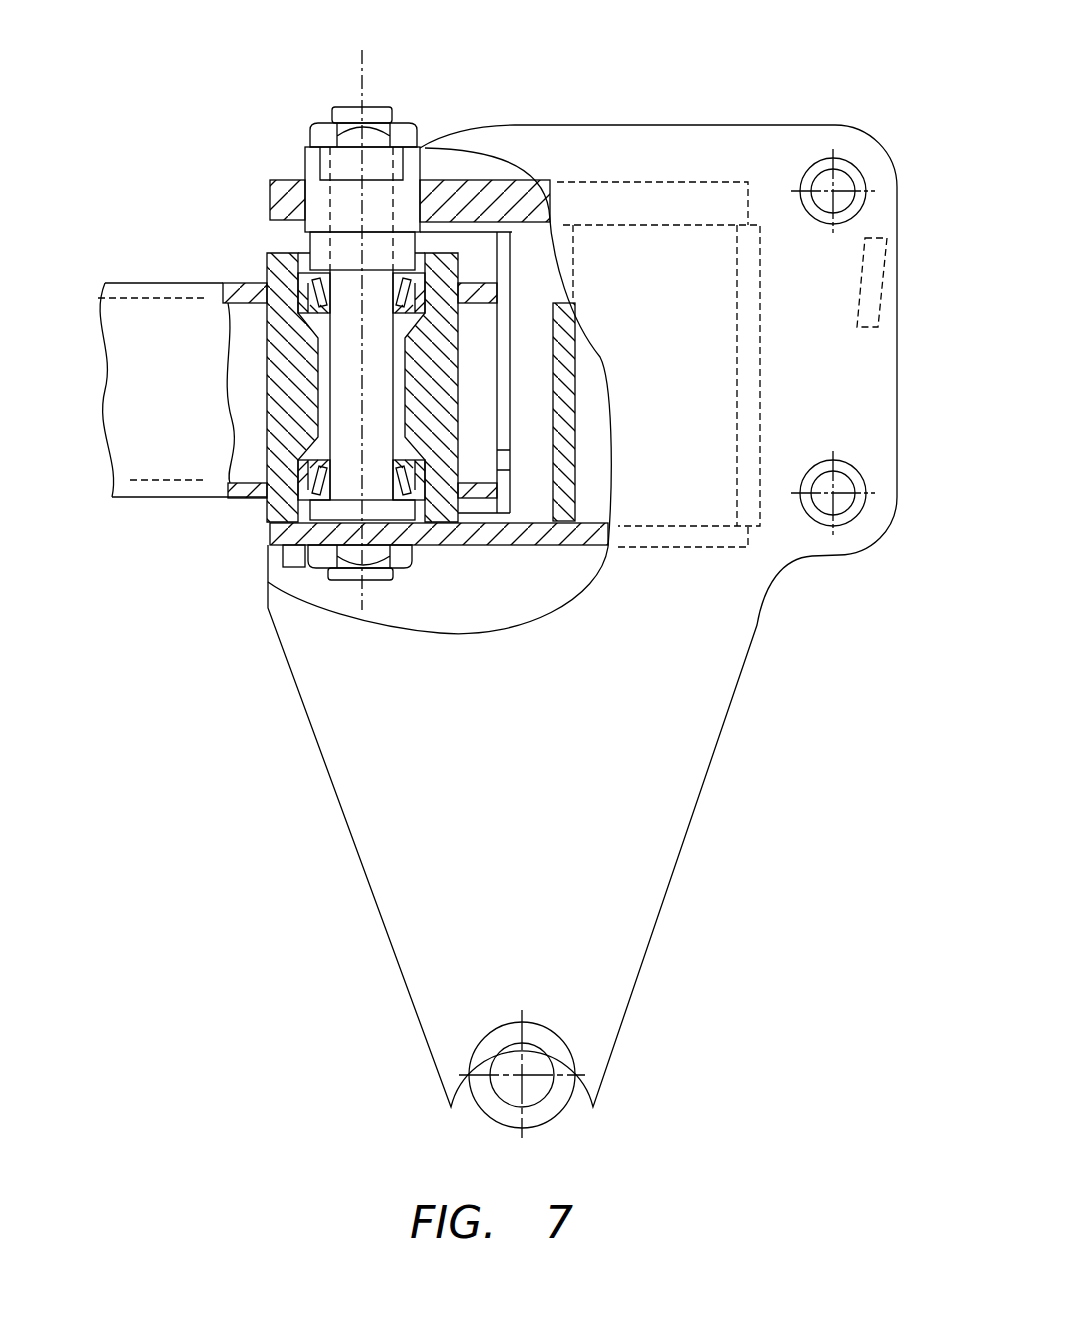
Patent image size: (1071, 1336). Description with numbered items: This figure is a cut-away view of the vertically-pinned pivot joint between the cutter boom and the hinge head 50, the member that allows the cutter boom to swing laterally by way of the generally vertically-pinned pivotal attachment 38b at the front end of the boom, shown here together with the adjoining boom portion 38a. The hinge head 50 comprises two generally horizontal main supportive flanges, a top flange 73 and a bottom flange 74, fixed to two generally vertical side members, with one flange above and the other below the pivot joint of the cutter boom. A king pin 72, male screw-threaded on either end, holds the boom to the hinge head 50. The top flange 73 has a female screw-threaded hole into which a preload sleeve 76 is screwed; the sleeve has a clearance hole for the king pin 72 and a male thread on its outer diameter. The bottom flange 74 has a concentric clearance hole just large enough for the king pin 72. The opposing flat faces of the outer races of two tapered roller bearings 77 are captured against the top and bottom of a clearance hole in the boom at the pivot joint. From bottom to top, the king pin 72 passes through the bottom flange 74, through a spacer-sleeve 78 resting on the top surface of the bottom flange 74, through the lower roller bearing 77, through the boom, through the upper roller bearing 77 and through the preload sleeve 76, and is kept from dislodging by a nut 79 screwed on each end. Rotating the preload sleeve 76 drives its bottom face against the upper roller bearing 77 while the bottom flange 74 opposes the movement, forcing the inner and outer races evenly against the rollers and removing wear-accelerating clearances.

The hinge head 50 is at (678, 868).
The king pin 72 is at (320, 390).
The top flange 73 is at (258, 202).
The bottom flange 74 is at (437, 560).
The preload sleeve 76 is at (388, 143).
The tapered roller bearings 77 is at (286, 274).
The spacer-sleeve 78 is at (483, 547).
The nut 79 is at (302, 115).
The arm portion 38a is at (146, 508).
The vertically-pinned pivotal attachment 38b is at (444, 242).